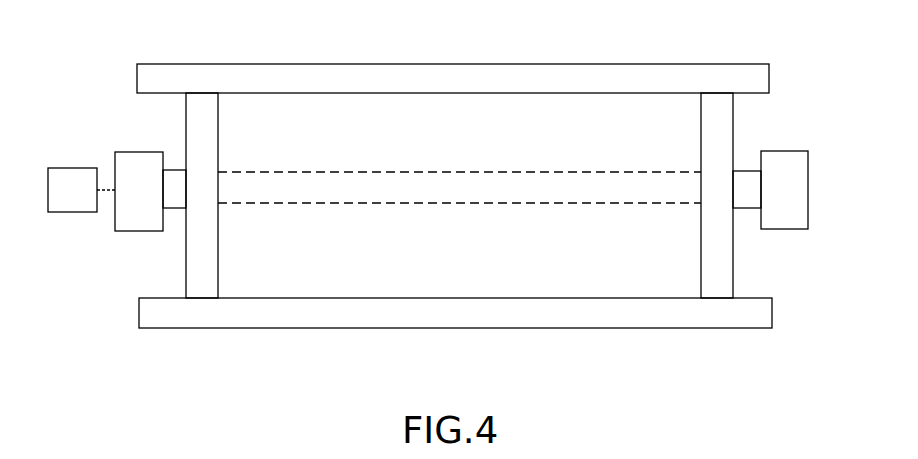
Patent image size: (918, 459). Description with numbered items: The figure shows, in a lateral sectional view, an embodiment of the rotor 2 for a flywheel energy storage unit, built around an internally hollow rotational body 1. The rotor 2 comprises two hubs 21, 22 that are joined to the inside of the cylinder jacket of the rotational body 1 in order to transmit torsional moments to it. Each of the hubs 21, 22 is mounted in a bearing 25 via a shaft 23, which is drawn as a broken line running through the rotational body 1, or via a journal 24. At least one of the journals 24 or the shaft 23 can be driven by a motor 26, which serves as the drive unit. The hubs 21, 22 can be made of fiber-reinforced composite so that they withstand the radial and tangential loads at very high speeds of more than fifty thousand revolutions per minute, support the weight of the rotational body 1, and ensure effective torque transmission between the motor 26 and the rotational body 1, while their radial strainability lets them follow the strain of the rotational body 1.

The rotational body 1 is at (454, 62).
The rotor 2 is at (103, 122).
The hub 21 is at (222, 140).
The hub 22 is at (698, 260).
The shaft 23 is at (443, 197).
The journal 24 is at (175, 191).
The bearing 25 is at (127, 183).
The motor 26 is at (62, 200).